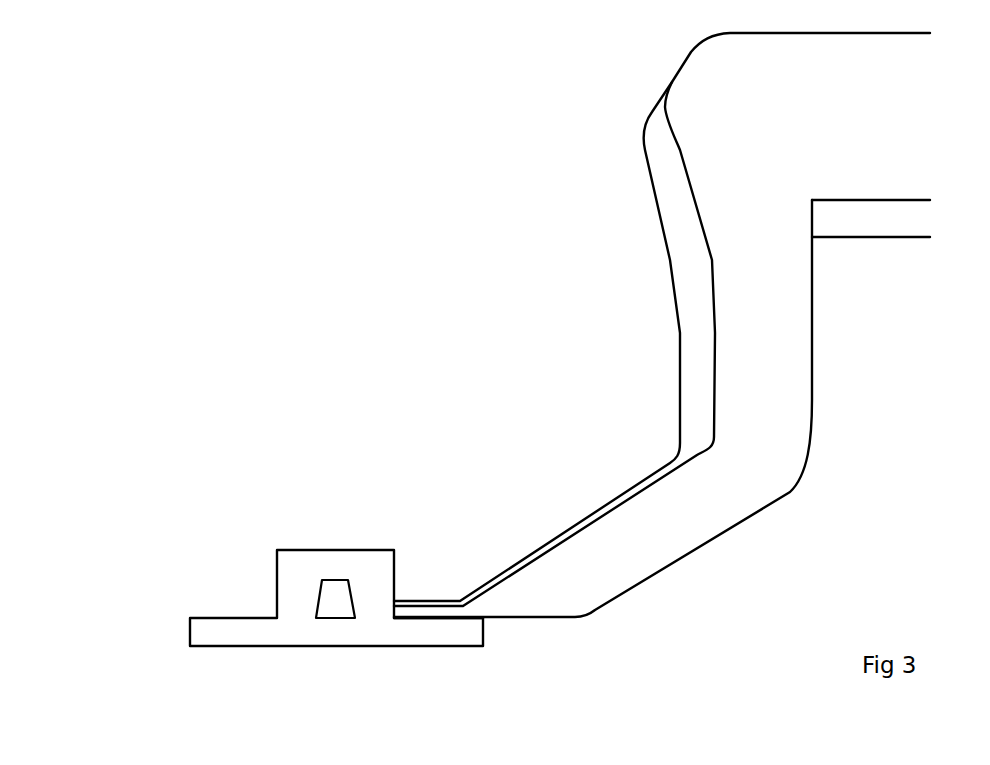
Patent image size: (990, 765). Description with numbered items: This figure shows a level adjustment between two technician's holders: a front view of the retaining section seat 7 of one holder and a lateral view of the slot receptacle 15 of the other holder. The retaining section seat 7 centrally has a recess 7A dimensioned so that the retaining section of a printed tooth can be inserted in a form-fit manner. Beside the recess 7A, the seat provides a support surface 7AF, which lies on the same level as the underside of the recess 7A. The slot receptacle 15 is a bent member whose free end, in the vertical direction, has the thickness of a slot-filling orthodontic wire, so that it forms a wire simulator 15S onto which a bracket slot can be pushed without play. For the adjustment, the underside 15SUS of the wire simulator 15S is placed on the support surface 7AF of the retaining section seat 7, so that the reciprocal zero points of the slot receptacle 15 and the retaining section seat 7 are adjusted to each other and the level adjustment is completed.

The retaining section seat 7 is at (220, 538).
The recess 7A is at (335, 598).
The support surface 7AF is at (428, 618).
The slot receptacle 15 is at (532, 452).
The wire simulator 15S is at (408, 613).
The underside of the wire simulator 15SUS is at (535, 617).